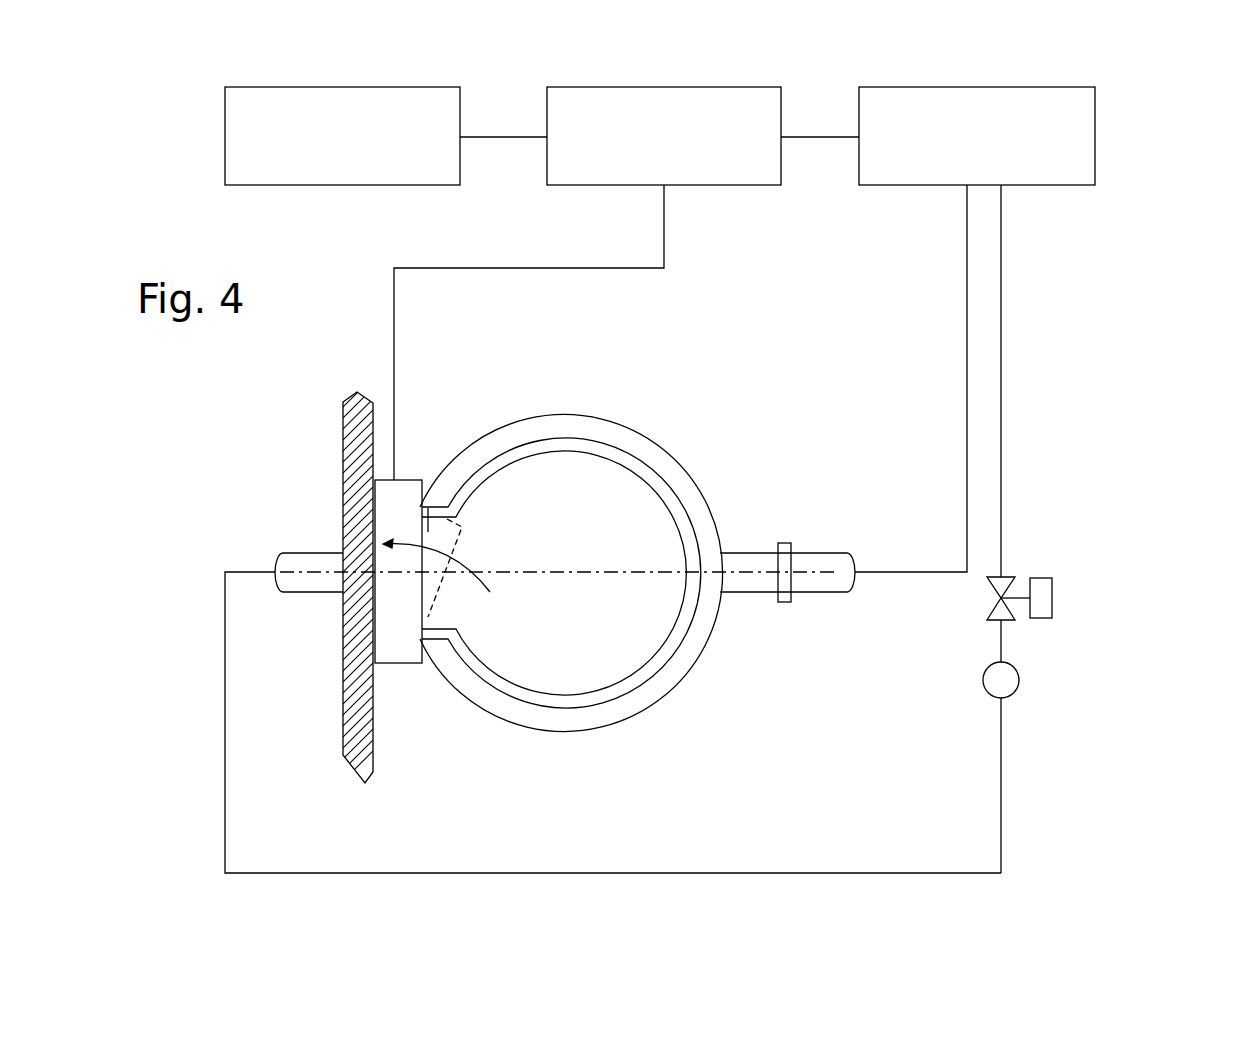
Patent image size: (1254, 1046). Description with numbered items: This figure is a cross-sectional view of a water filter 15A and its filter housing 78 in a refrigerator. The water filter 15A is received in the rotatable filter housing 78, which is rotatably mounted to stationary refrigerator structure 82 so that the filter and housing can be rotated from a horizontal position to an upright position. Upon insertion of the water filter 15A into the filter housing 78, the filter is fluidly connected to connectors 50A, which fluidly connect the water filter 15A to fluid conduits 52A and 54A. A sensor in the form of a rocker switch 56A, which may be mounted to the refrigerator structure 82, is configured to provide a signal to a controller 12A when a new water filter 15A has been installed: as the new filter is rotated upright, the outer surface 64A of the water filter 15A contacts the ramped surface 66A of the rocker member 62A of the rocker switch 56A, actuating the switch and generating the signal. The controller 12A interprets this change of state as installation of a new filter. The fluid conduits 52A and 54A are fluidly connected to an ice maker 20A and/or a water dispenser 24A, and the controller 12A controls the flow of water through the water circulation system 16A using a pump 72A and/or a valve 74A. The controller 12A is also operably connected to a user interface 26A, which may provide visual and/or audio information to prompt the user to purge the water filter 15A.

The user interface 26A is at (357, 87).
The controller 12A is at (655, 87).
The ice maker 20A is at (1047, 116).
The water dispenser 24A is at (1095, 128).
The fluid conduit 54A is at (1003, 458).
The water circulation system 16A is at (1003, 792).
The fluid conduit 52A is at (225, 722).
The valve 74A is at (1052, 604).
The pump 72A is at (1019, 681).
The connectors 50A is at (305, 553).
The refrigerator structure 82 is at (343, 430).
The rocker switch 56A is at (408, 480).
The filter housing 78 is at (636, 425).
The outer surface 64A is at (563, 442).
The water filter 15A is at (655, 502).
The rocker member 62A is at (426, 500).
The ramped surface 66A is at (455, 517).